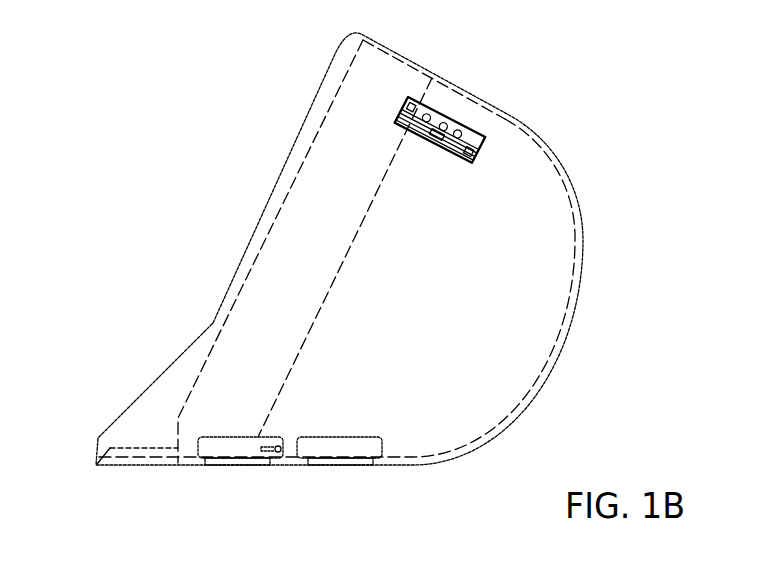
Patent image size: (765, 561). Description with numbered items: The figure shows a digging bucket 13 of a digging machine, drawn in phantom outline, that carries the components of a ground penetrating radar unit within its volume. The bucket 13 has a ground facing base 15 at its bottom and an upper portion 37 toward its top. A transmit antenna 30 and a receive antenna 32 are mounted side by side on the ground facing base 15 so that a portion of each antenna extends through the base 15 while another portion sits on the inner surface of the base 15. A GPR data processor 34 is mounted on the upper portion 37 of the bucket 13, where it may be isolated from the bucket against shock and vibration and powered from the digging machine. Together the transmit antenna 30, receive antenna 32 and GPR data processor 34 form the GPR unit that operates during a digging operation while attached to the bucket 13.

The digging bucket 13 is at (560, 320).
The ground facing base 15 is at (287, 465).
The transmit antenna 30 is at (237, 452).
The receive antenna 32 is at (345, 450).
The GPR data processor 34 is at (493, 152).
The upper portion 37 is at (473, 97).